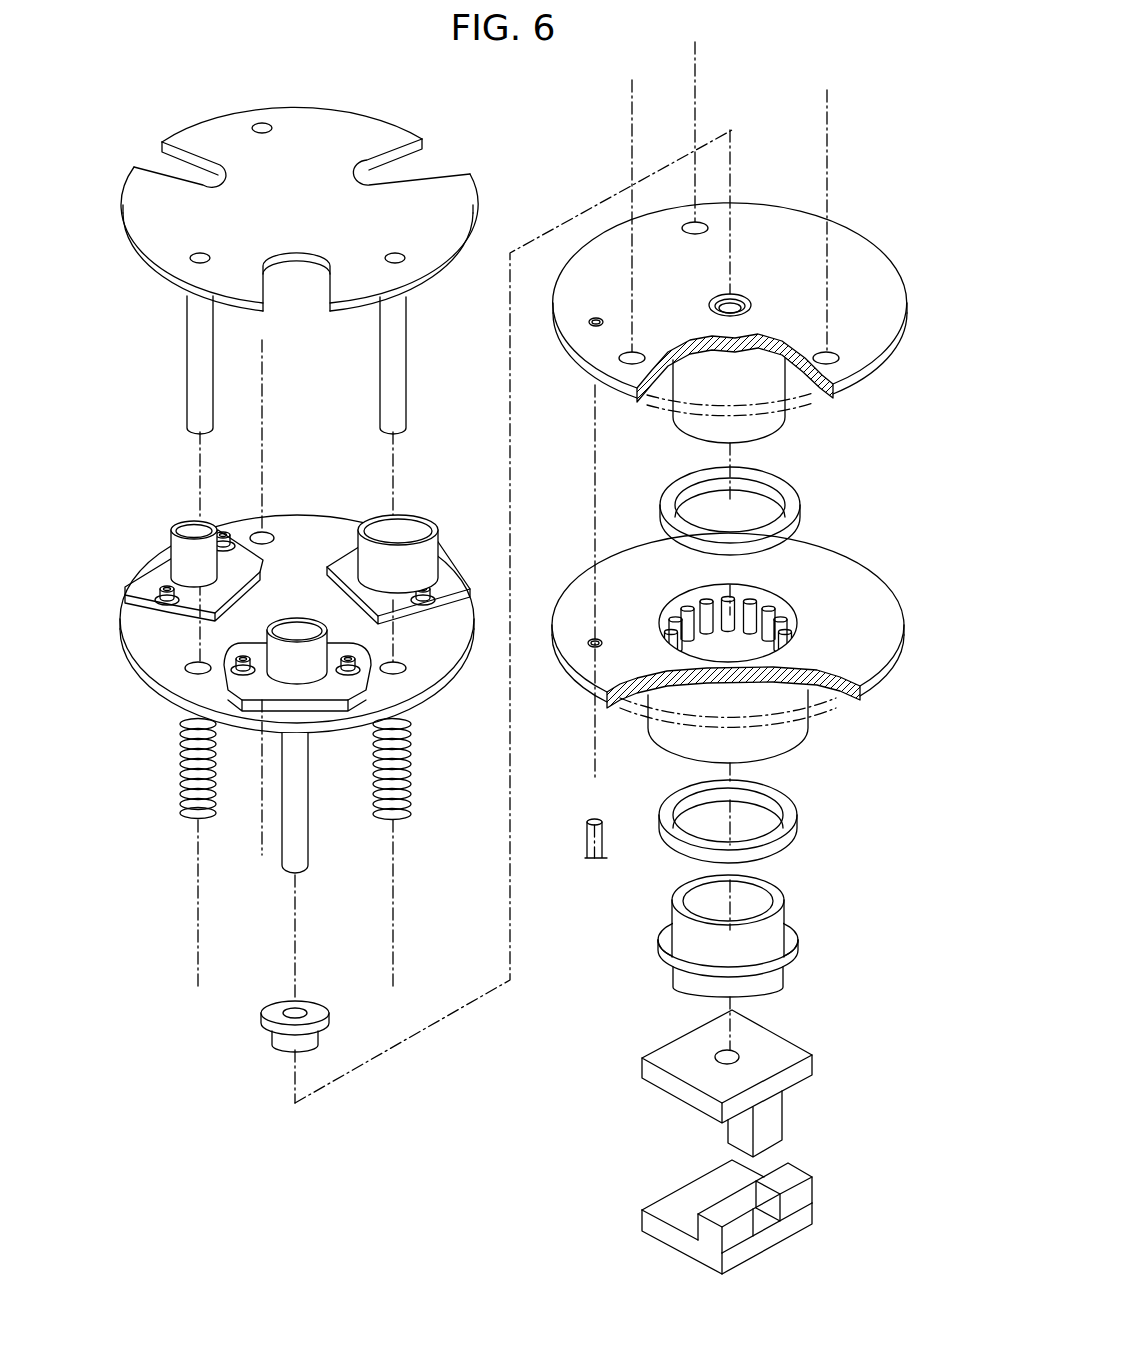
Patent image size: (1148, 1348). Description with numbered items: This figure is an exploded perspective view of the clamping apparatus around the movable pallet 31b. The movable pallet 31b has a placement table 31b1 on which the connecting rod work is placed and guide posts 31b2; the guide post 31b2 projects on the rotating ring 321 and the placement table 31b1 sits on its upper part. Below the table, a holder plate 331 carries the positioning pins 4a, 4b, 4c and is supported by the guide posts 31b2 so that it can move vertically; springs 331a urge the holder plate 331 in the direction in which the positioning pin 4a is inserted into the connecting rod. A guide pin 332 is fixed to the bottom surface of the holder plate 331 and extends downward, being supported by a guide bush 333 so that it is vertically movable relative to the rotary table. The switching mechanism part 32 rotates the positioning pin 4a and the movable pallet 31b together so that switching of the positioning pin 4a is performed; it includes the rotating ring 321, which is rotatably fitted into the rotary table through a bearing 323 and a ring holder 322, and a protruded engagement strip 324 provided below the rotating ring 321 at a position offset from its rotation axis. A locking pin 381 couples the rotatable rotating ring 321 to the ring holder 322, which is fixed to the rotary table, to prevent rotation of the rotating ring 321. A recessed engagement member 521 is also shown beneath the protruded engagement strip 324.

The movable pallet 31b is at (393, 106).
The placement table 31b1 is at (192, 135).
The guide post 31b2 is at (273, 283).
The holder plate 331 is at (128, 612).
The positioning pin 4a is at (300, 627).
The positioning pin 4b is at (190, 527).
The positioning pin 4c is at (415, 528).
The spring 331a is at (182, 798).
The guide pin 332 is at (300, 797).
The guide bush 333 is at (262, 1028).
The switching mechanism part 32 is at (834, 755).
The rotating ring 321 is at (872, 335).
The ring holder 322 is at (860, 596).
The bearing 323 is at (695, 597).
The locking pin 381 is at (587, 835).
The protruded engagement strip 324 is at (662, 1080).
The recessed engagement member 521 is at (678, 1208).